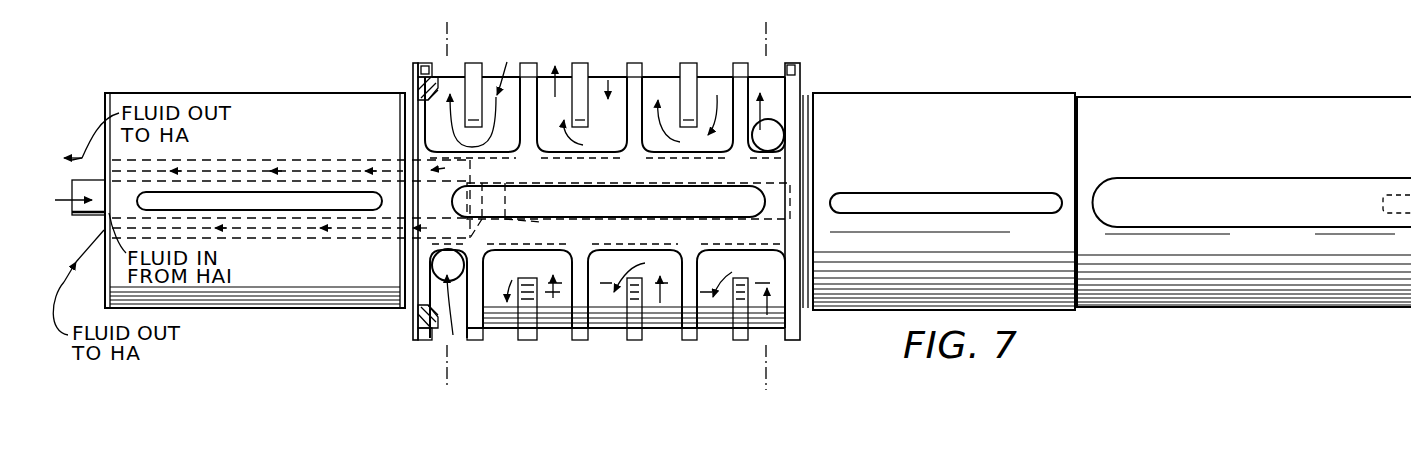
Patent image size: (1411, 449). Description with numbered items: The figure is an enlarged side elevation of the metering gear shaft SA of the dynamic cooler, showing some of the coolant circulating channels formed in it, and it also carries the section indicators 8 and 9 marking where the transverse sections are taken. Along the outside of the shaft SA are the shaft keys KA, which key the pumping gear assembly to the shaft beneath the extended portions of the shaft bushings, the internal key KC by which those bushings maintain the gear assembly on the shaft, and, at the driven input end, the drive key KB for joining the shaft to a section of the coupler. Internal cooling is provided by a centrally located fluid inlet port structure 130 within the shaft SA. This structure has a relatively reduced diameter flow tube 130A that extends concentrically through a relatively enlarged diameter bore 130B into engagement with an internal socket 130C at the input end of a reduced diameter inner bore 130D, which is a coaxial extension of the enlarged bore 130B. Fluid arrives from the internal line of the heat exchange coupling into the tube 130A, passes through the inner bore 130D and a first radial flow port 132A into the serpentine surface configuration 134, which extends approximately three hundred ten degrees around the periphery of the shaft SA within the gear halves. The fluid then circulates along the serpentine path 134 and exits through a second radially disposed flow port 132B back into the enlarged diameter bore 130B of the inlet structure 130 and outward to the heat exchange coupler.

The fluid inlet port structure 130 is at (101, 244).
The flow tube 130A is at (88, 190).
The enlarged diameter bore 130B is at (286, 238).
The internal socket 130C is at (489, 179).
The inner bore 130D is at (541, 222).
The first radial flow port 132A is at (784, 135).
The second radial flow port 132B is at (432, 266).
The serpentine surface configuration 134 is at (622, 141).
The section line 8 is at (439, 35).
The section line 9 is at (758, 35).
The shaft key KA is at (299, 192).
The drive key KB is at (1283, 195).
The internal key KC is at (680, 203).
The shaft SA is at (289, 129).